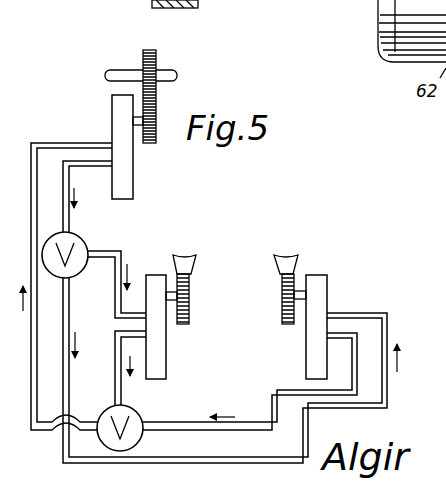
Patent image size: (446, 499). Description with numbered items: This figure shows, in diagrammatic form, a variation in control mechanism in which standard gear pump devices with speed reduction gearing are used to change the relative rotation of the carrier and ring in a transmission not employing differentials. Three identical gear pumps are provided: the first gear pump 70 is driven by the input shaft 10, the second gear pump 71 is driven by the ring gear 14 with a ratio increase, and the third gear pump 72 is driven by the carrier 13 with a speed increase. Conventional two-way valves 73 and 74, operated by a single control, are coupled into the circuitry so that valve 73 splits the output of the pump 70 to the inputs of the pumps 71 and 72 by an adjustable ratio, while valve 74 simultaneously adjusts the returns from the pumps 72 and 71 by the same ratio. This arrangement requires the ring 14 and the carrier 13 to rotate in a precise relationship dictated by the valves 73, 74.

The input shaft 10 is at (118, 72).
The gear pump 70 is at (118, 115).
The two-way valve 73 is at (67, 238).
The two-way valve 74 is at (128, 415).
The gear pump 72 is at (157, 360).
The gear pump 71 is at (312, 353).
The carrier 13 is at (185, 263).
The ring gear 14 is at (290, 260).